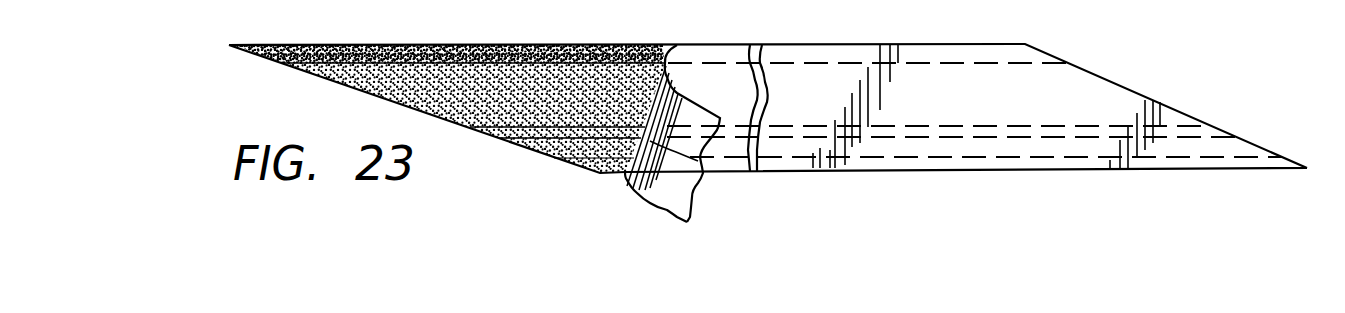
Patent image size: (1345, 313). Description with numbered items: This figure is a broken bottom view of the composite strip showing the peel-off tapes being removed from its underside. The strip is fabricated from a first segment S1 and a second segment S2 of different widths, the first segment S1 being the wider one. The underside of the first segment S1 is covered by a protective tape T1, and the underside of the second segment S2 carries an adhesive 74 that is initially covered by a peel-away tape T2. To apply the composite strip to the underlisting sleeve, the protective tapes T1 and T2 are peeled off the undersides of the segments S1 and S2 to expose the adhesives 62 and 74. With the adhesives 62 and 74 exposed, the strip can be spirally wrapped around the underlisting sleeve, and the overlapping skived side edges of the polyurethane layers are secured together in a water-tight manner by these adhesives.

The adhesive 62 is at (534, 73).
The adhesive 74 is at (567, 153).
The protective tape T1 is at (694, 112).
The peel-away tape T2 is at (682, 192).
The first segment S1 is at (1080, 66).
The second segment S2 is at (1190, 167).